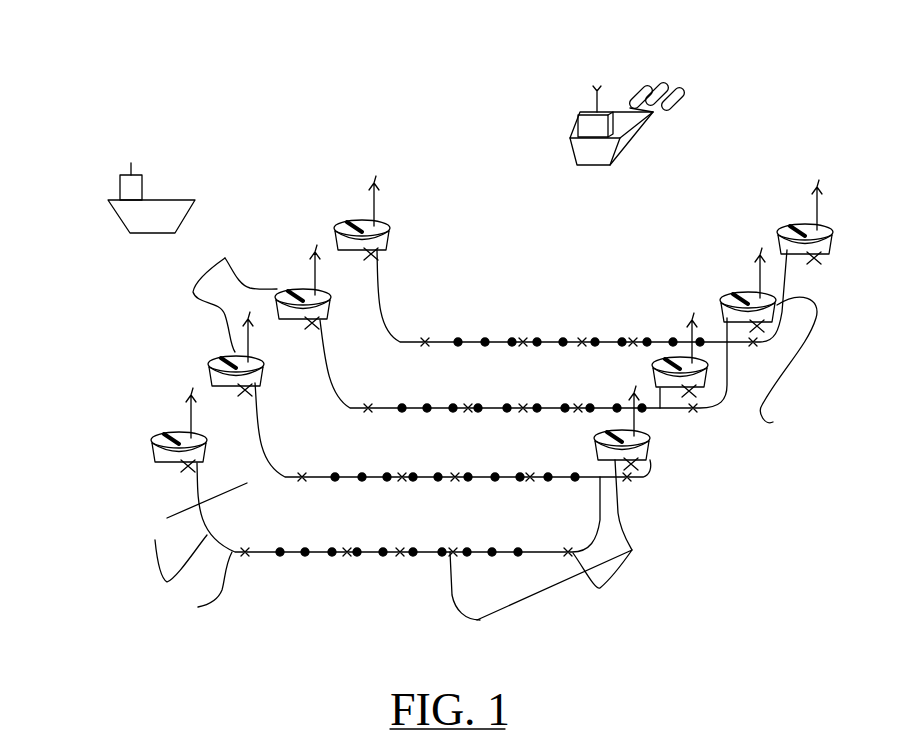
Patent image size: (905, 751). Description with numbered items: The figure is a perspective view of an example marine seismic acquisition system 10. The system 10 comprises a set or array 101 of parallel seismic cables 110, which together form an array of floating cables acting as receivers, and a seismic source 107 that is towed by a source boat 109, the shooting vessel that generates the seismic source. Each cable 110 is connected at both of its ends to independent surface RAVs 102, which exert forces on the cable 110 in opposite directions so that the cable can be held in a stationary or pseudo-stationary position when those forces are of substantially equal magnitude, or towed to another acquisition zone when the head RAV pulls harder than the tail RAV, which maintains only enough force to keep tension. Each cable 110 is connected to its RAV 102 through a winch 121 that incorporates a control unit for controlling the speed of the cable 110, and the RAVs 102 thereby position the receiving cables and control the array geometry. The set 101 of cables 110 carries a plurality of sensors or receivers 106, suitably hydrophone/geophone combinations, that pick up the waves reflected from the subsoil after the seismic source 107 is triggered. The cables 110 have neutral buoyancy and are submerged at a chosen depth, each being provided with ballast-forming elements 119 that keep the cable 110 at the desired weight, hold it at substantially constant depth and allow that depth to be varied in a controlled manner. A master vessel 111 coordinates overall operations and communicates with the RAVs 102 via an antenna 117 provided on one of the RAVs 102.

The marine seismic acquisition system 10 is at (150, 72).
The array of seismic cables 101 is at (428, 593).
The RAV 102 is at (210, 360).
The sensor/receiver 106 is at (595, 338).
The seismic source 107 is at (676, 80).
The source boat 109 is at (590, 157).
The seismic cable 110 is at (183, 532).
The master vessel 111 is at (133, 248).
The antenna 117 is at (235, 291).
The ballast-forming element 119 is at (445, 574).
The winch 121 is at (750, 296).